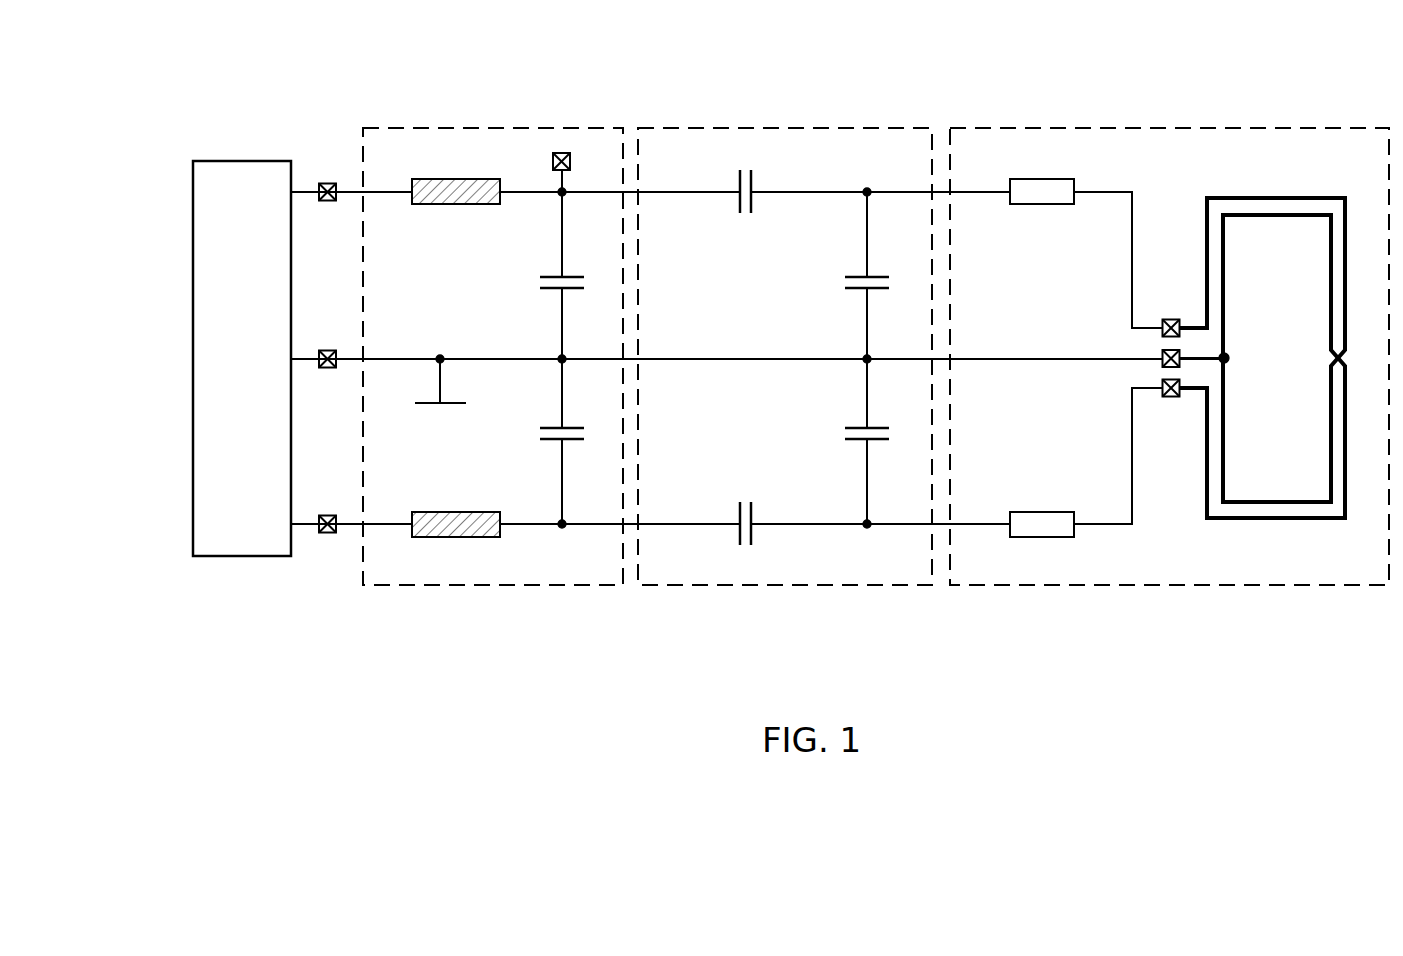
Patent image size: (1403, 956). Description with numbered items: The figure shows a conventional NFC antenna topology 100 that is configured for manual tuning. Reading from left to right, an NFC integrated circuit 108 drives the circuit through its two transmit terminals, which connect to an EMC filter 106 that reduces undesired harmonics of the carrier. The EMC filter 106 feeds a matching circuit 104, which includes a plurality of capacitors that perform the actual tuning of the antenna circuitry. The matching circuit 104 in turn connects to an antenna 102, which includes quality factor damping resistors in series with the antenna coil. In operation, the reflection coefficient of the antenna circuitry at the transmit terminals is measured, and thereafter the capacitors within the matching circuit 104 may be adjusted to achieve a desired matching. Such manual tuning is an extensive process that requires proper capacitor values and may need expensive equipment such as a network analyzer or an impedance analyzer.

The NFC antenna topology 100 is at (1028, 56).
The antenna 102 is at (1133, 128).
The matching circuit 104 is at (785, 128).
The EMC filter 106 is at (493, 128).
The NFC integrated circuit 108 is at (242, 161).